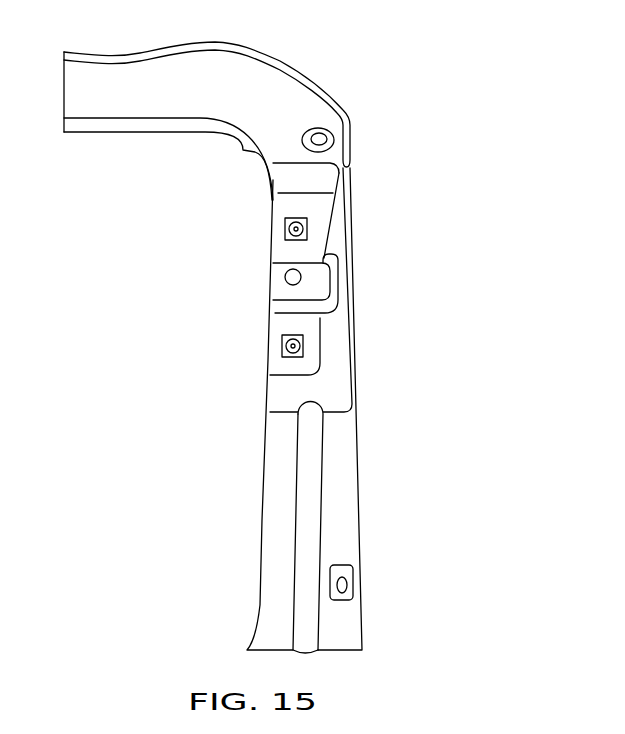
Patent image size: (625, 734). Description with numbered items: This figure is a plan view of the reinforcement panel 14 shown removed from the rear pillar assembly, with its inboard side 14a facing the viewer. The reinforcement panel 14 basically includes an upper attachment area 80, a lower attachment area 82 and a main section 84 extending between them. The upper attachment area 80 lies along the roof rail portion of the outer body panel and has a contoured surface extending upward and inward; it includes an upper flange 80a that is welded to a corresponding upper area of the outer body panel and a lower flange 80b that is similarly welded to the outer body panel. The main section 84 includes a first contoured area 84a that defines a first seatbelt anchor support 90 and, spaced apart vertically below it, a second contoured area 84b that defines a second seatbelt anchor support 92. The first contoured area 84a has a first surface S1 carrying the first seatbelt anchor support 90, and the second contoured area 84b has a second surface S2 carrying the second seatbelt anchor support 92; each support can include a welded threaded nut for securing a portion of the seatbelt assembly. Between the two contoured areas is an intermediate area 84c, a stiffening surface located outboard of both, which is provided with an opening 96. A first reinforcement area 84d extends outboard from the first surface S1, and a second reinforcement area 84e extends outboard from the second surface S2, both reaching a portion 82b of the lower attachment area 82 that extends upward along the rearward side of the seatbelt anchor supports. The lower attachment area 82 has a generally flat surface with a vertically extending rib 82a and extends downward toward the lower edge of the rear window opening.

The reinforcement panel 14 is at (466, 200).
The inboard side 14a is at (330, 397).
The upper attachment area 80 is at (203, 111).
The upper flange 80a is at (158, 55).
The lower flange 80b is at (57, 152).
The lower attachment area 82 is at (305, 528).
The vertically extending rib 82a is at (310, 485).
The portion 82b is at (340, 530).
The main section 84 is at (302, 291).
The first contoured area 84a is at (316, 176).
The second contoured area 84b is at (313, 327).
The intermediate area 84c is at (318, 282).
The first reinforcement area 84d is at (334, 227).
The second reinforcement area 84e is at (333, 348).
The first seatbelt anchor support 90 is at (285, 223).
The second seatbelt anchor support 92 is at (282, 350).
The opening 96 is at (285, 275).
The first surface S1 is at (315, 207).
The second surface S2 is at (308, 360).